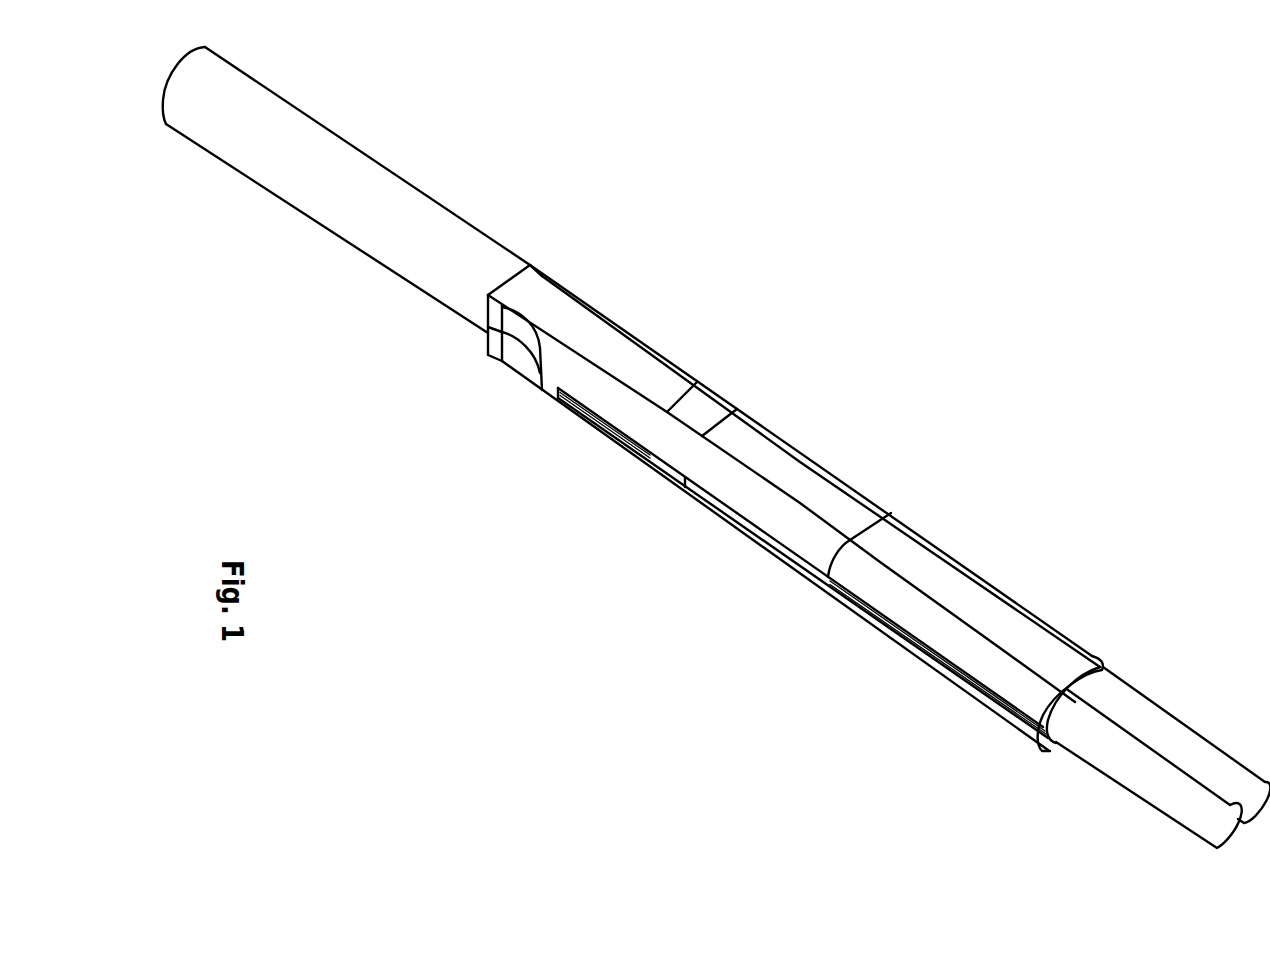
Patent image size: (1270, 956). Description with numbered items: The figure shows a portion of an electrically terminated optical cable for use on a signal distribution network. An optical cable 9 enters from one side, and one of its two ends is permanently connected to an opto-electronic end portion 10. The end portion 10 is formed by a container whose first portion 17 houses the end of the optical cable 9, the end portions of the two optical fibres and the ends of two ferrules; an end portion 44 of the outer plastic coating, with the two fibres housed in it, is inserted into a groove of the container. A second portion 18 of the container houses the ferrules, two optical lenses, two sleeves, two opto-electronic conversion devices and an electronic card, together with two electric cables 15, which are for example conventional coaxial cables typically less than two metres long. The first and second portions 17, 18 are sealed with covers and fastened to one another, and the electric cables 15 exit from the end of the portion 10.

The optical cable 9 is at (346, 190).
The end portion of the outer plastic coating 44 is at (435, 200).
The first portion 17 is at (649, 342).
The opto-electronic end portion 10 is at (863, 453).
The second portion 18 is at (894, 638).
The electric cables 15 is at (1190, 733).